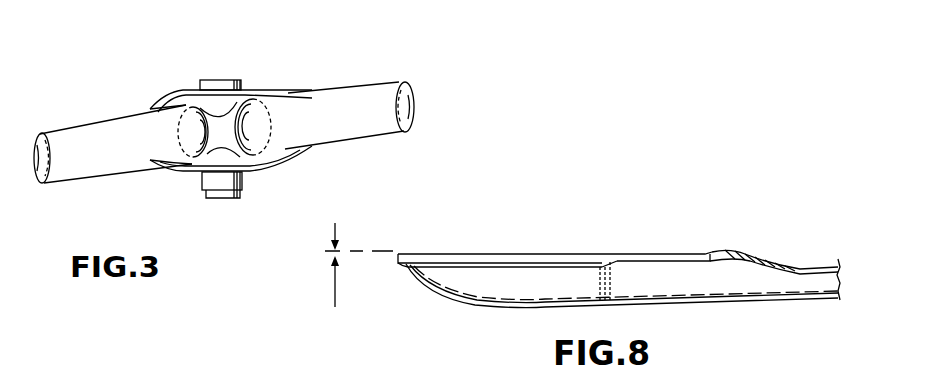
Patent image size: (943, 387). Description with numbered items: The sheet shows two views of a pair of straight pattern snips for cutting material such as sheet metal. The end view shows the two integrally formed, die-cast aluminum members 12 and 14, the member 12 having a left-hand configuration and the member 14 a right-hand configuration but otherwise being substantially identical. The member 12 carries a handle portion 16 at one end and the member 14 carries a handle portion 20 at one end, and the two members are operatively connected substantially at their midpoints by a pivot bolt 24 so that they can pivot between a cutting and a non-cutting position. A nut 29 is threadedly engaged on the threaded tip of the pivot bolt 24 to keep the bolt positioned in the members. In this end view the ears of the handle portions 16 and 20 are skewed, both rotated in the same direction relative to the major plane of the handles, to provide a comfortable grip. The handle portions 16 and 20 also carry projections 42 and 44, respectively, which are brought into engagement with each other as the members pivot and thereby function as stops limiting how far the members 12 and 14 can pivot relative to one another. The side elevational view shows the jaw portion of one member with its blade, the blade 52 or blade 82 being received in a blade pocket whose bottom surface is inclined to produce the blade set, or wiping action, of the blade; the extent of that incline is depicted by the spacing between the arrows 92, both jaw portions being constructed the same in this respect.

In FIG. 3, the member 12 is at (172, 87).
In FIG. 8, the member 12 is at (516, 310).
In FIG. 3, the member 14 is at (279, 172).
In FIG. 8, the member 14 is at (618, 285).
In FIG. 3, the handle portion 16 is at (340, 82).
In FIG. 3, the handle portion 20 is at (107, 180).
In FIG. 3, the pivot bolt 24 is at (221, 80).
In FIG. 3, the nut 29 is at (232, 199).
In FIG. 3, the projection 42 is at (232, 125).
In FIG. 3, the projection 44 is at (226, 127).
In FIG. 8, the blade 52 is at (500, 254).
In FIG. 8, the blade 82 is at (619, 275).
In FIG. 8, the arrows 92 is at (335, 300).